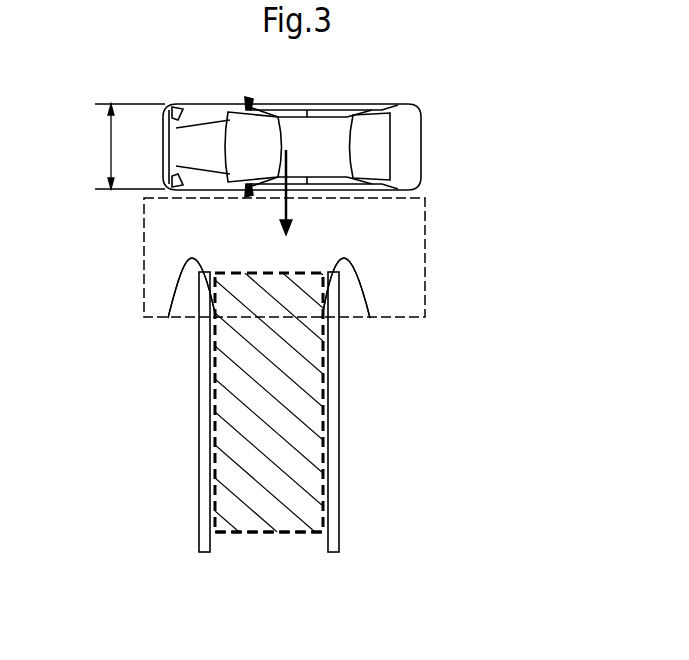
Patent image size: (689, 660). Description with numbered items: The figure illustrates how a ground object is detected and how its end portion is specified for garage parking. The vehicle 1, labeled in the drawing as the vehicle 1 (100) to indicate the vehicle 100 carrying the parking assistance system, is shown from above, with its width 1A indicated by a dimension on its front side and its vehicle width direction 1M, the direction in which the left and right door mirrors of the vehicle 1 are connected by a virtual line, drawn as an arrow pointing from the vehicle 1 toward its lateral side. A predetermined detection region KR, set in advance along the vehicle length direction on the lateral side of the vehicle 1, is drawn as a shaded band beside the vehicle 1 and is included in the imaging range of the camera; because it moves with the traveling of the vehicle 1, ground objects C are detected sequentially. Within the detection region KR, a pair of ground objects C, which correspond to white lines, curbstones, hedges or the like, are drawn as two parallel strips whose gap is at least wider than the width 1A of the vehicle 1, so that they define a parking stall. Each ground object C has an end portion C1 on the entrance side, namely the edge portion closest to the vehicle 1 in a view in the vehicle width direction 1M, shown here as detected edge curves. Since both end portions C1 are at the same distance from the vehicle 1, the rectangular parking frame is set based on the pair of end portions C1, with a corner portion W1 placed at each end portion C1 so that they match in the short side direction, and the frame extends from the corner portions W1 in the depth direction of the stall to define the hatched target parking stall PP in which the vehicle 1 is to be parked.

The vehicle 1 is at (367, 147).
The vehicle 100 is at (422, 147).
The vehicle width direction 1M is at (287, 160).
The width of the vehicle 1A is at (118, 146).
The detection region KR is at (425, 256).
The corner portion W1 is at (212, 272).
The end portion C1 is at (171, 318).
The target parking stall PP is at (237, 409).
The ground object C is at (198, 474).